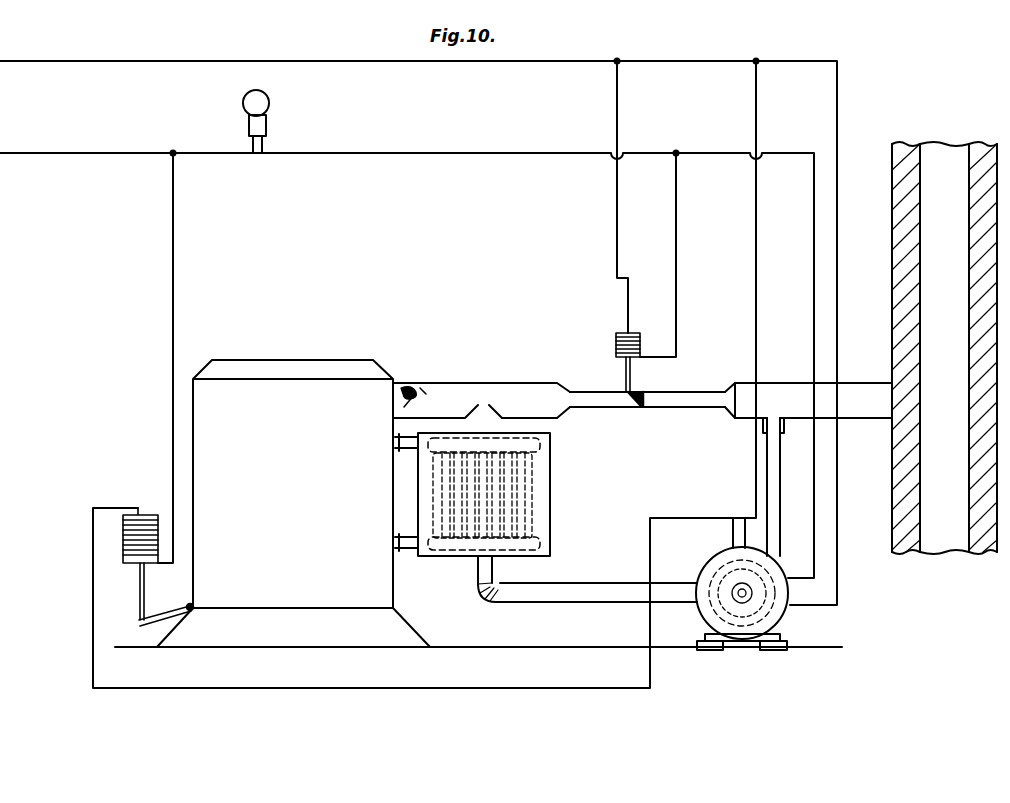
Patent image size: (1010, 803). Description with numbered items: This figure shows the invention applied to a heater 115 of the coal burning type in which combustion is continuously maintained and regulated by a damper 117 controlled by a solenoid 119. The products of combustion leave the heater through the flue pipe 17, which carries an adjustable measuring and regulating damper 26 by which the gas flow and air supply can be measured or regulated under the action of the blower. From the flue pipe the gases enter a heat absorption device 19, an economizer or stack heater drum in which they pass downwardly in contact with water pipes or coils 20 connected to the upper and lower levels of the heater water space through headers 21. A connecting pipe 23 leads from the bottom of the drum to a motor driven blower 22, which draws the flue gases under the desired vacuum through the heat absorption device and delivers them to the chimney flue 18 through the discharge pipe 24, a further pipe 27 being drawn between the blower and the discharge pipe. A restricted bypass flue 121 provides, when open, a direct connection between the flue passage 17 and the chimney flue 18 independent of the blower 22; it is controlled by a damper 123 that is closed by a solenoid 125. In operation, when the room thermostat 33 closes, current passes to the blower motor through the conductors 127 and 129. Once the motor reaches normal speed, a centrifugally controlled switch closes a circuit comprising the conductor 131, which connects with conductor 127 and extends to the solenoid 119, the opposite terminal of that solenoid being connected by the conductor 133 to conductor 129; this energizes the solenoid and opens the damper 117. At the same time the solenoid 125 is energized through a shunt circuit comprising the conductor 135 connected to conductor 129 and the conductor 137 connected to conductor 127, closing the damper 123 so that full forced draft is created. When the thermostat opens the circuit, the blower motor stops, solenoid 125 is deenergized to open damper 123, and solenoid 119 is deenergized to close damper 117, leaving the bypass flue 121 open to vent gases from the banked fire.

The conductor 127 is at (846, 322).
The conductor 129 is at (88, 154).
The temperature responsive control device 33 is at (268, 122).
The conductor 133 is at (174, 266).
The conductor 137 is at (618, 237).
The conductor 135 is at (678, 265).
The conductor 131 is at (758, 306).
The solenoid 125 is at (614, 342).
The damper 123 is at (648, 402).
The bypass flue 121 is at (647, 415).
The flue pipe 17 is at (472, 383).
The damper 26 is at (428, 399).
The discharge pipe 24 is at (868, 419).
The chimney flue 18 is at (942, 550).
The pipe 27 is at (776, 480).
The heat absorption device 19 is at (552, 486).
The headers 21 is at (552, 445).
The water pipes or coils 20 is at (520, 519).
The connecting pipe 23 is at (586, 592).
The heater 115 is at (384, 578).
The blower 22 is at (790, 626).
The solenoid 119 is at (124, 558).
The damper 117 is at (160, 610).